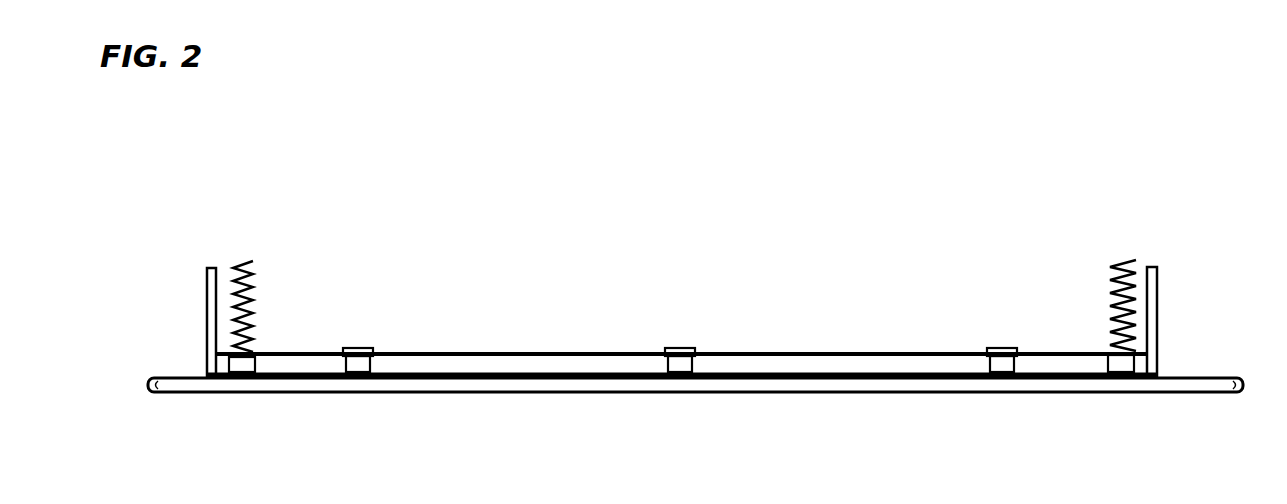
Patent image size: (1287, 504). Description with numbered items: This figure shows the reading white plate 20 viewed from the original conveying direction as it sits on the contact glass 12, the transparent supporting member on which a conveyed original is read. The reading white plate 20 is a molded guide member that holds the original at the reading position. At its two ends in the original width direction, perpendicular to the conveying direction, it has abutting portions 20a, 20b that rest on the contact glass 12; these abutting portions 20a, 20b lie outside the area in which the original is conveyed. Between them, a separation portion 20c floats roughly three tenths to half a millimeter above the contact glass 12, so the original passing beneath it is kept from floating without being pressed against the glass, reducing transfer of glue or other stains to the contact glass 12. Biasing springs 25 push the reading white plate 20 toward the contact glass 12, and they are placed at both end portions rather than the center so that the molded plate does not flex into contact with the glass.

The contact glass 12 is at (1078, 384).
The reading white plate 20 is at (833, 360).
The abutting portion 20a is at (210, 373).
The abutting portion 20b is at (1157, 373).
The separation portion 20c is at (493, 372).
The biasing spring 25 is at (247, 263).